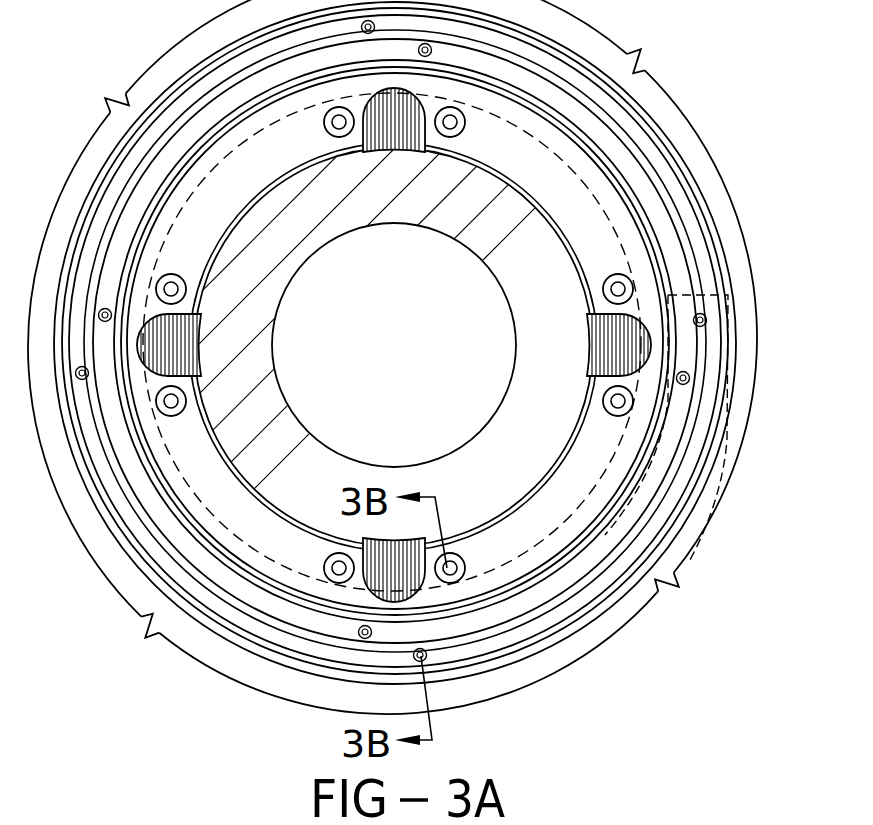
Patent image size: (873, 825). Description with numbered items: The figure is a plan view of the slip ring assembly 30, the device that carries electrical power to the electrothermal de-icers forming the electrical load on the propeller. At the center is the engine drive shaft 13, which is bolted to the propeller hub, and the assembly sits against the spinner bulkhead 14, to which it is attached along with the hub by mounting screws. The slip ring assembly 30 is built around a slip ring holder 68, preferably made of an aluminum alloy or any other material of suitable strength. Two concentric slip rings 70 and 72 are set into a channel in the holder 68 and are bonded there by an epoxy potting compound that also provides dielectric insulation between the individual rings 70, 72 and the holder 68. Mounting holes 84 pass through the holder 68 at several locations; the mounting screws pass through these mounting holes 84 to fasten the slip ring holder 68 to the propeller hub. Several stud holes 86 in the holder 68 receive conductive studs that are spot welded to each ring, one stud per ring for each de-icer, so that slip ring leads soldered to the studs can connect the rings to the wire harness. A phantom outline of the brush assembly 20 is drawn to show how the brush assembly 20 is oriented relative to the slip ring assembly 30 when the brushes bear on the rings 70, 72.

The engine drive shaft 13 is at (510, 508).
The spinner bulkhead 14 is at (184, 648).
The brush assembly 20 is at (712, 488).
The slip ring assembly 30 is at (108, 524).
The slip ring holder 68 is at (155, 577).
The slip ring 70 is at (578, 118).
The slip ring 72 is at (520, 52).
The mounting holes 84 is at (183, 283).
The stud holes 86 is at (418, 660).